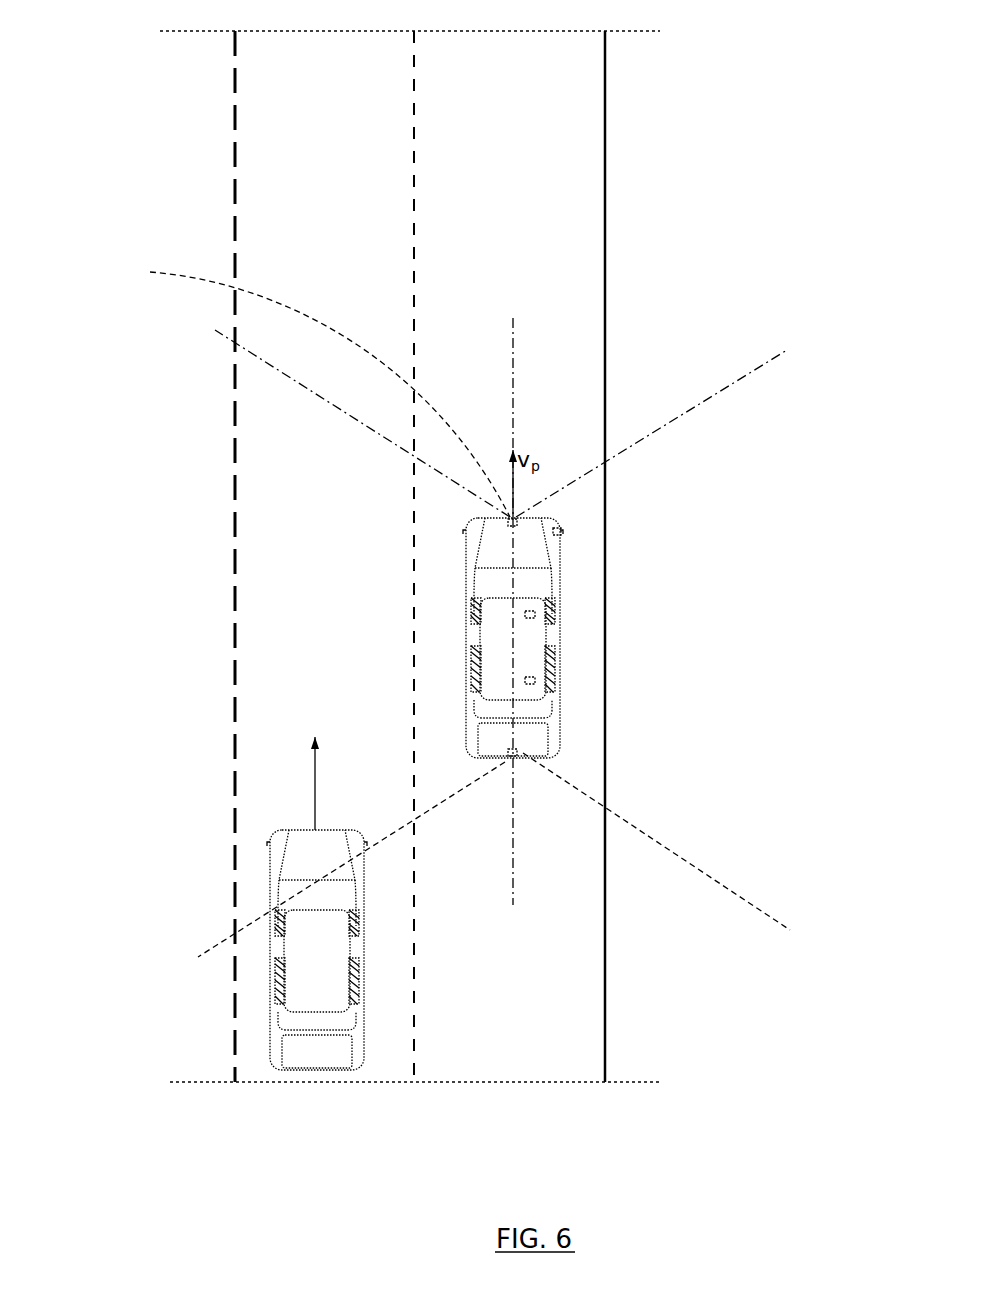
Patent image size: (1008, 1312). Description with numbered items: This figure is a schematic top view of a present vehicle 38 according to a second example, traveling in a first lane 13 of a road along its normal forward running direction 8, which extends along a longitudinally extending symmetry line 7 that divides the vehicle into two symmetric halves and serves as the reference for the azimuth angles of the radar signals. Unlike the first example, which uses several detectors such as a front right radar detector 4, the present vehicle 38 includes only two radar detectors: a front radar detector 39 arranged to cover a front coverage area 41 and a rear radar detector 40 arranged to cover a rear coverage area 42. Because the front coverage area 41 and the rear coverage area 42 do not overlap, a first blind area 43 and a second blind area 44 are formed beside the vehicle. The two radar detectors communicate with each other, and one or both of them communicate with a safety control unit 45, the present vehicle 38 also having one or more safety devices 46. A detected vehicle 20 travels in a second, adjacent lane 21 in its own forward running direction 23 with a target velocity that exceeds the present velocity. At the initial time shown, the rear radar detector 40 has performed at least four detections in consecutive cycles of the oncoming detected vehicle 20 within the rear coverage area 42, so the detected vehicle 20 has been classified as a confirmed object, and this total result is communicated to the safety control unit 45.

The front right radar detector 4 is at (560, 532).
The symmetry line 7 is at (513, 360).
The forward running direction 8 is at (513, 498).
The first lane 13 is at (507, 999).
The detected vehicle 20 is at (323, 967).
The second lane 21 is at (255, 1042).
The forward running direction of the detected vehicle 23 is at (315, 800).
The present vehicle 38 is at (530, 657).
The front radar detector 39 is at (312, 387).
The rear radar detector 40 is at (525, 758).
The front coverage area 41 is at (378, 293).
The rear coverage area 42 is at (543, 850).
The first blind area 43 is at (287, 606).
The second blind area 44 is at (803, 457).
The safety control unit 45 is at (557, 700).
The safety devices 46 is at (556, 617).